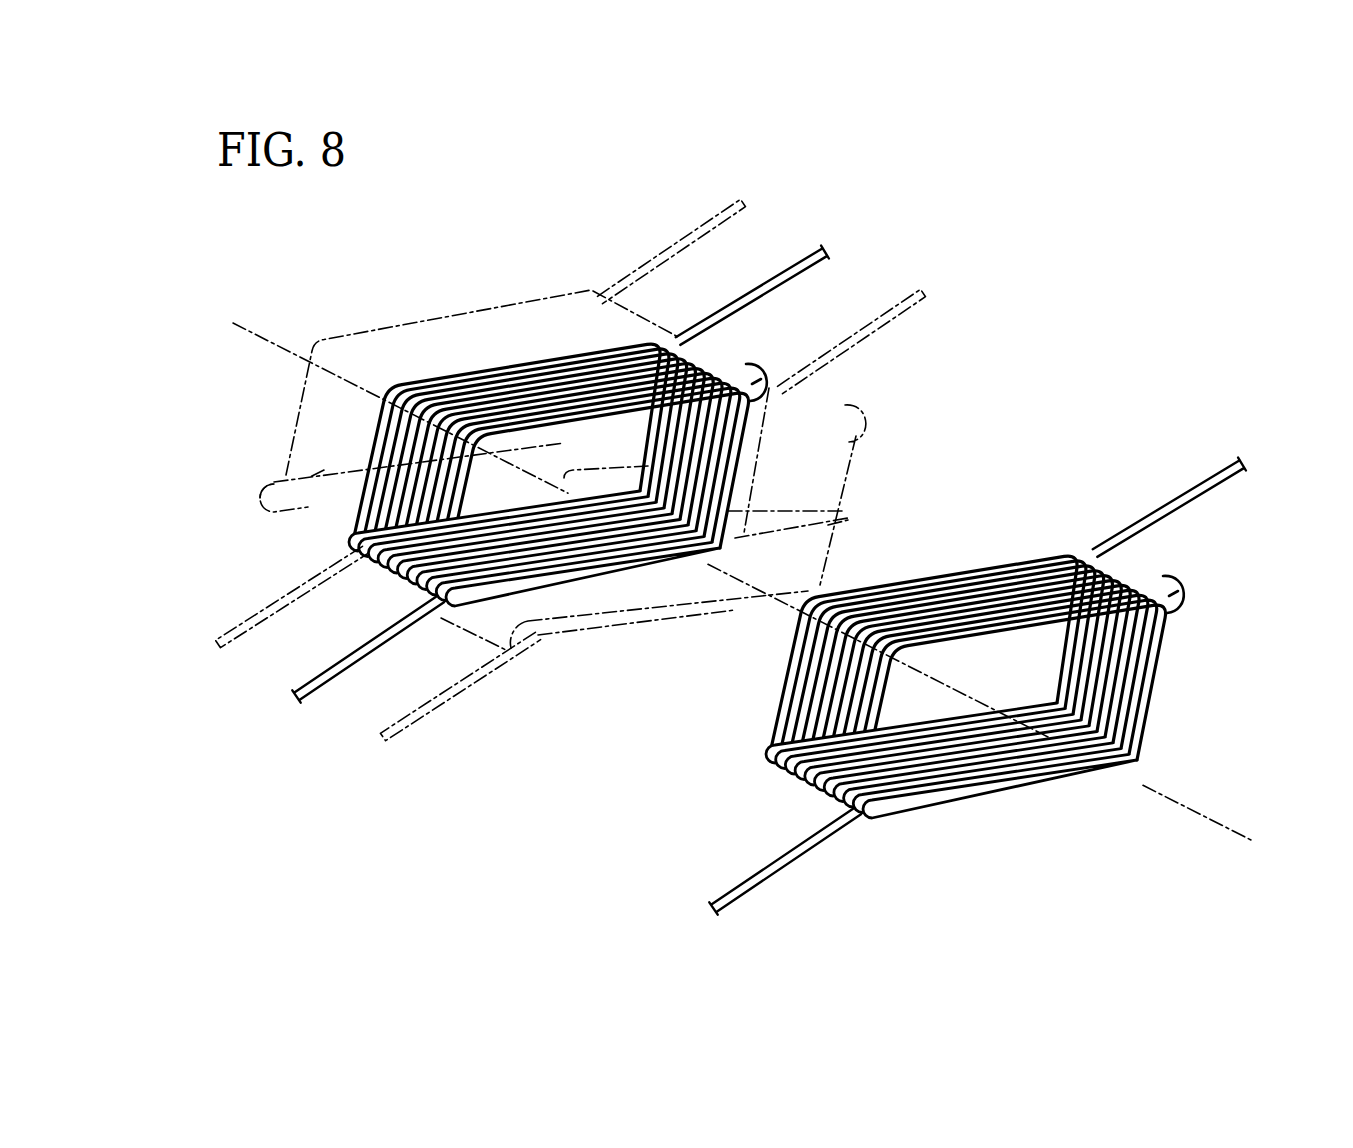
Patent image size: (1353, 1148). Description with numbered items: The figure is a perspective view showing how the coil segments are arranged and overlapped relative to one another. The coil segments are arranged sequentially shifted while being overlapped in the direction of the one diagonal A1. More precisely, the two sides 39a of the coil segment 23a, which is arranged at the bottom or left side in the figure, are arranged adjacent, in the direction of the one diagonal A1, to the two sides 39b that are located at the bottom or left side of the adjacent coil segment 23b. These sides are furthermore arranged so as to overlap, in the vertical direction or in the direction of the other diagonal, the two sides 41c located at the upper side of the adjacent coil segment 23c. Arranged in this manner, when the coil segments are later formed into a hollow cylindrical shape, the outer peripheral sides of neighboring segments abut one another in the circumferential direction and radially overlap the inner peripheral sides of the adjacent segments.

The coil segment 23a is at (754, 344).
The coil segment 23b is at (840, 392).
The coil segment 23c is at (675, 301).
The two sides 39a is at (588, 345).
The two sides 39b is at (822, 517).
The two sides 41c is at (548, 340).
The one diagonal A1 is at (1174, 798).